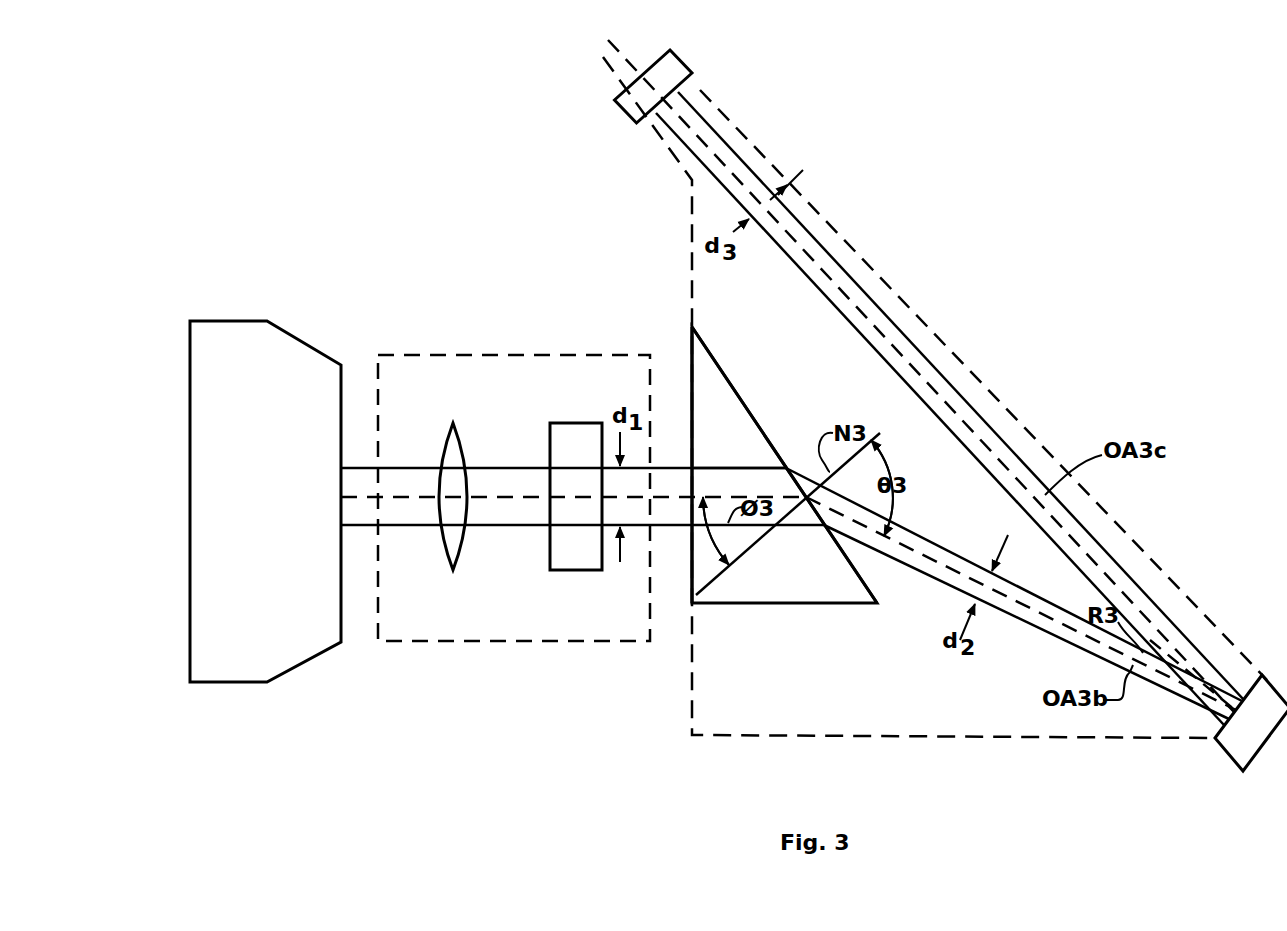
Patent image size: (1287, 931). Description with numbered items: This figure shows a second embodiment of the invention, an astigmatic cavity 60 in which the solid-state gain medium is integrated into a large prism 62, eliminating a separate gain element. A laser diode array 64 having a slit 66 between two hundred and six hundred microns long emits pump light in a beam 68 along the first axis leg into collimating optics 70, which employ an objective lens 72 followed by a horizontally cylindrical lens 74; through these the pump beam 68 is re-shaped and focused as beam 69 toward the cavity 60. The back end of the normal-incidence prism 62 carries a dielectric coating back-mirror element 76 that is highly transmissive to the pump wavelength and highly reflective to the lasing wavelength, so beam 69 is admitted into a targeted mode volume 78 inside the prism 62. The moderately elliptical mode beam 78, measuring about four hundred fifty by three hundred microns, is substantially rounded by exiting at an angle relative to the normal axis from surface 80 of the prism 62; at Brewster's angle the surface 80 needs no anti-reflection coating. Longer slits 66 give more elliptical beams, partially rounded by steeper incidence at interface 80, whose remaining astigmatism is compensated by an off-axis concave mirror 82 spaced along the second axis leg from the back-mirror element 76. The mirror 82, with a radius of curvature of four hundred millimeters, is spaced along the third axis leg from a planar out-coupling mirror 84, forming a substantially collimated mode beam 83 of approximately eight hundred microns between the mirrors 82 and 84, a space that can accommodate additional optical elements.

The astigmatic cavity 60 is at (754, 652).
The prism 62 is at (762, 578).
The laser diode array 64 is at (257, 412).
The slit 66 is at (340, 485).
The beam 68 is at (368, 515).
The beam 69 is at (683, 515).
The collimating optics 70 is at (499, 392).
The objective lens 72 is at (457, 547).
The horizontally cylindrical lens 74 is at (562, 547).
The back-mirror element 76 is at (690, 395).
The mode volume 78 is at (740, 468).
The surface 80 is at (770, 438).
The concave mirror 82 is at (1251, 723).
The mode beam 83 is at (795, 209).
The out-coupling mirror 84 is at (632, 118).